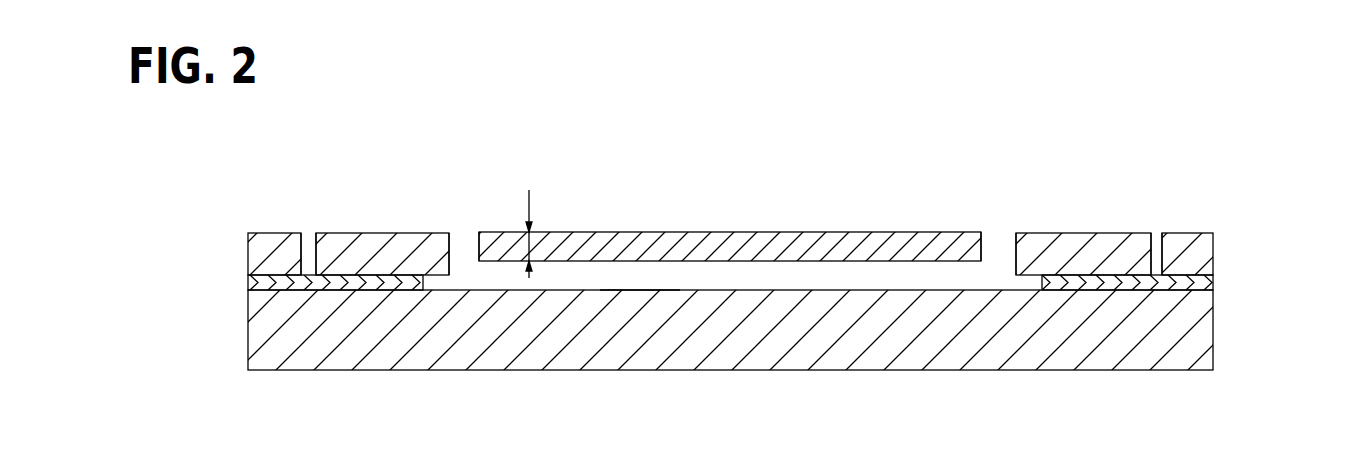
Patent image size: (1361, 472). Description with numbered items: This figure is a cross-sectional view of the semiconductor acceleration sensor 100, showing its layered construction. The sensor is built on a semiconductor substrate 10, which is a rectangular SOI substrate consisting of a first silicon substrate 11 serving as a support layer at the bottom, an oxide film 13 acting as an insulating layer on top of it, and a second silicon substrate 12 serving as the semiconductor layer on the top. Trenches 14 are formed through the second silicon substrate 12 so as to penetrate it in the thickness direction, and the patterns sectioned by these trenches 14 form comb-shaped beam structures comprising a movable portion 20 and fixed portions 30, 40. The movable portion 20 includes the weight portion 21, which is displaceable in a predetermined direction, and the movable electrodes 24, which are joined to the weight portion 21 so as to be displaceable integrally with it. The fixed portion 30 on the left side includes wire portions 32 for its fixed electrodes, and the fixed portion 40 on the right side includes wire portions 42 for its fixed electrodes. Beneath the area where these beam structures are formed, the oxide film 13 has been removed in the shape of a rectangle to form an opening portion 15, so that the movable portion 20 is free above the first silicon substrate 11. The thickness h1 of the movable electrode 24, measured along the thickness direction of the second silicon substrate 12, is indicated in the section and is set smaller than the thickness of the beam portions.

The semiconductor substrate 10 is at (792, 255).
The first silicon substrate 11 is at (1202, 311).
The second silicon substrate 12 is at (1204, 262).
The oxide film 13 is at (1208, 281).
The trenches 14 is at (308, 242).
The opening portion 15 is at (642, 276).
The movable portion 20 is at (730, 205).
The weight portion 21 is at (722, 232).
The movable electrodes 24 is at (492, 232).
The fixed portion 30 is at (382, 220).
The wire portions 32 is at (333, 232).
The fixed portion 40 is at (1087, 220).
The wire portions 42 is at (1153, 242).
The semiconductor acceleration sensor 100 is at (792, 288).
The thickness of the movable electrode h1 is at (533, 246).